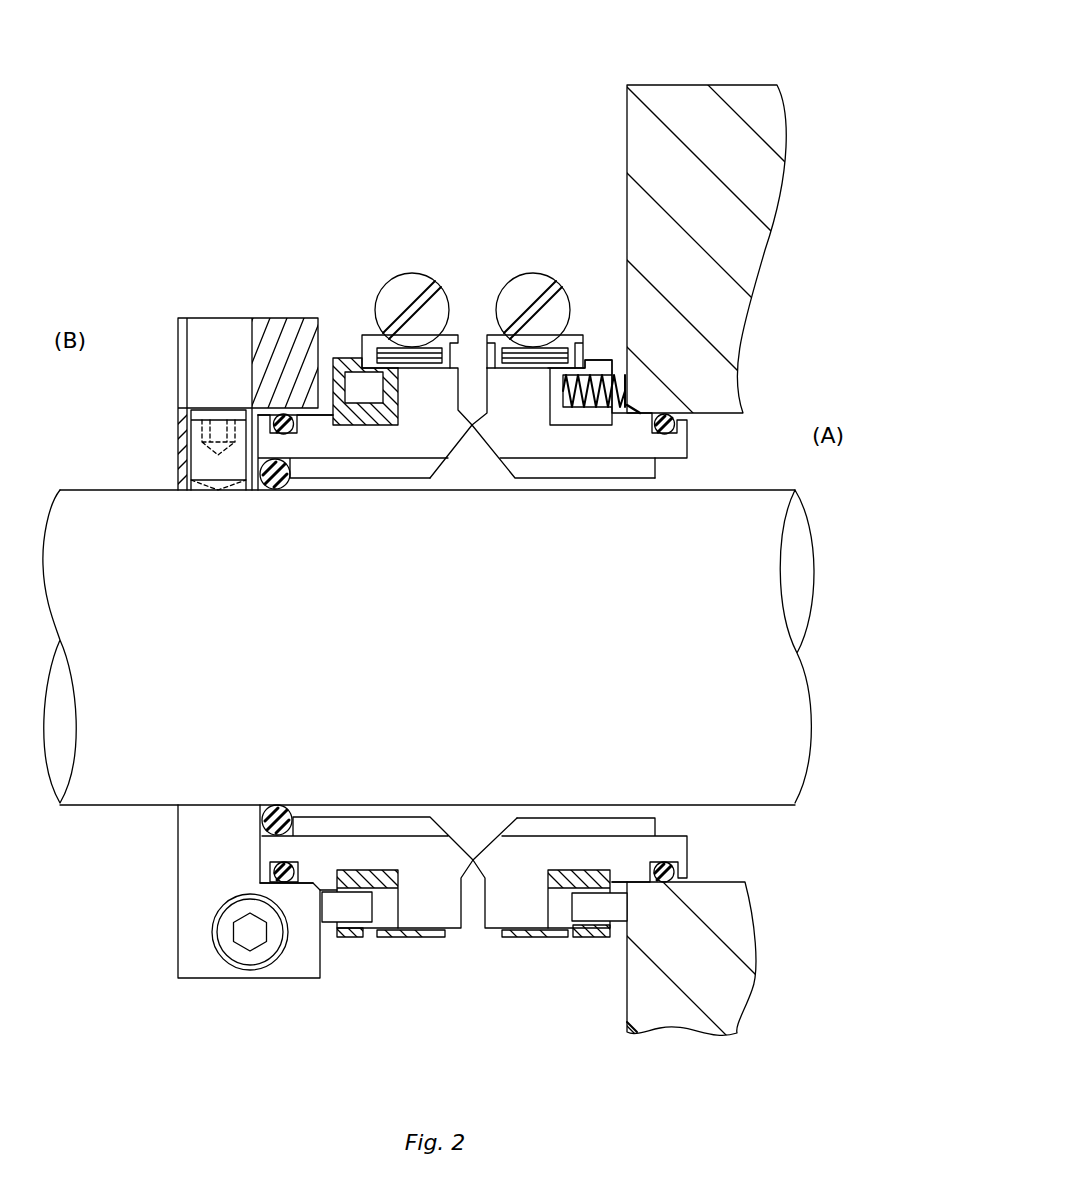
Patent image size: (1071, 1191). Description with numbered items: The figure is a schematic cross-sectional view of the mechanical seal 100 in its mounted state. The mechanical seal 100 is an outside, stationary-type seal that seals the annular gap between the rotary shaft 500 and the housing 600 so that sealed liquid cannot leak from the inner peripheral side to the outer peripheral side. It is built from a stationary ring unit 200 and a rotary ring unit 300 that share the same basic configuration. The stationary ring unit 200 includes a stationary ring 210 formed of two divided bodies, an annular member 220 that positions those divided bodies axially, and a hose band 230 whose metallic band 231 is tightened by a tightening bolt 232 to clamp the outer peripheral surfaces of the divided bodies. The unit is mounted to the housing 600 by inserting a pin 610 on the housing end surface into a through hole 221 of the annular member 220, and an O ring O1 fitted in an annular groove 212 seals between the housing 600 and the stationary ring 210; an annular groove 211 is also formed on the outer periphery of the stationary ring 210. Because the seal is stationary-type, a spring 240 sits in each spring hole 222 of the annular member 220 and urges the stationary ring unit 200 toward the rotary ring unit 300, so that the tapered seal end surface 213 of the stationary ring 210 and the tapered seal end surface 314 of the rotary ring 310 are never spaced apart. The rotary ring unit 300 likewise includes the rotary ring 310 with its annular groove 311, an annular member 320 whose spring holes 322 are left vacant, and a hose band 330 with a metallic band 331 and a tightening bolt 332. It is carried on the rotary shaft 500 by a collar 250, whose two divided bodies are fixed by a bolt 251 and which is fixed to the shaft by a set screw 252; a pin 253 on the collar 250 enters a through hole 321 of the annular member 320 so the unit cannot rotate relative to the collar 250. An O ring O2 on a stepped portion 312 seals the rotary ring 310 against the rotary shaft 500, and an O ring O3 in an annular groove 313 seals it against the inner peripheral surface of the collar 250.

The mechanical seal 100 is at (398, 222).
The stationary ring unit 200 is at (545, 980).
The stationary ring 210 is at (583, 802).
The annular groove 211 is at (545, 425).
The annular groove 212 is at (690, 890).
The seal end surface 213 is at (470, 430).
The annular member 220 is at (581, 945).
The through hole 221 is at (552, 903).
The spring holes 222 is at (575, 378).
The hose band 230 is at (545, 268).
The metallic band 231 is at (520, 938).
The tightening bolt 232 is at (510, 295).
The spring 240 is at (614, 373).
The collar 250 is at (275, 330).
The bolt 251 is at (230, 916).
The set screw 252 is at (200, 462).
The pin 253 is at (330, 903).
The rotary ring unit 300 is at (368, 978).
The rotary ring 310 is at (368, 802).
The annular groove 311 is at (405, 430).
The stepped portion 312 is at (292, 478).
The annular groove 313 is at (285, 414).
The seal end surface 314 is at (470, 420).
The annular member 320 is at (347, 942).
The through hole 321 is at (405, 912).
The spring holes 322 is at (348, 385).
The hose band 330 is at (392, 266).
The metallic band 331 is at (410, 938).
The tightening bolt 332 is at (377, 310).
The rotary shaft 500 is at (428, 647).
The housing 600 is at (690, 105).
The pin 610 is at (620, 905).
The O ring O1 is at (670, 428).
The O ring O2 is at (272, 480).
The O ring O3 is at (260, 415).